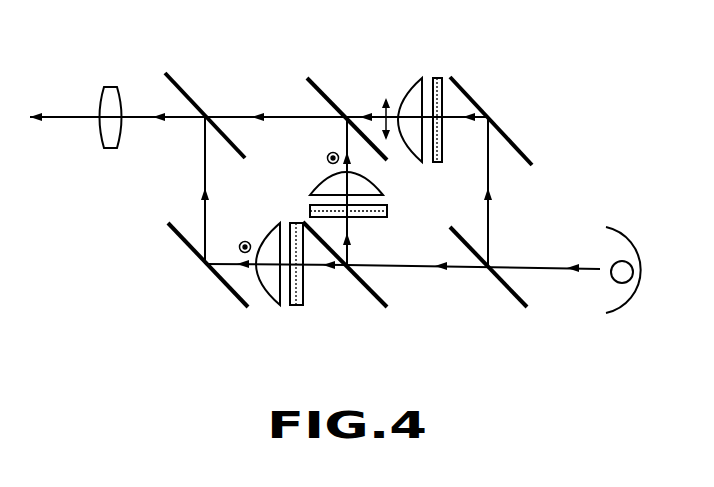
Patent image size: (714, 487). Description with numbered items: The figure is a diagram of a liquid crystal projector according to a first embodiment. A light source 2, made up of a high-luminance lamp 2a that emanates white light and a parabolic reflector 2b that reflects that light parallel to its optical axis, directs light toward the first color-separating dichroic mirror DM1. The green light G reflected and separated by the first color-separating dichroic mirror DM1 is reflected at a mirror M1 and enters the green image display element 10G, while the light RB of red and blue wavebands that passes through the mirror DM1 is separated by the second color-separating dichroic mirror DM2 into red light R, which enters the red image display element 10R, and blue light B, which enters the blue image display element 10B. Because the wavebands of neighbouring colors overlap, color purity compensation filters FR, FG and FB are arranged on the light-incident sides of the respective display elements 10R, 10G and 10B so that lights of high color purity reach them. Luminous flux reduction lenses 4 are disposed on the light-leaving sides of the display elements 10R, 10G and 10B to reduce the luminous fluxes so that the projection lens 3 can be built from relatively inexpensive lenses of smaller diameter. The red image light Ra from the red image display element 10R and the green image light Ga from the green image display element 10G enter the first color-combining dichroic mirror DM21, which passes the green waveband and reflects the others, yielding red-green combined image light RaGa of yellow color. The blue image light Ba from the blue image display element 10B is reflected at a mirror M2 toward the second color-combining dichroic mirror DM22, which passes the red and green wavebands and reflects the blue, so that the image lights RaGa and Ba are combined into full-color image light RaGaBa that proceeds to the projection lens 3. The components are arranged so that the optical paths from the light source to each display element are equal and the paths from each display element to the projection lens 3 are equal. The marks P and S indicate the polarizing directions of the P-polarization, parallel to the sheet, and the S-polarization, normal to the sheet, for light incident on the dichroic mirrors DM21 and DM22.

The light source 2 is at (603, 251).
The high-luminance lamp 2a is at (612, 262).
The reflector 2b is at (634, 296).
The projection lens 3 is at (105, 135).
The luminous flux reduction lens 4 is at (413, 82).
The green image display element 10G is at (437, 78).
The red image display element 10R is at (309, 206).
The blue image display element 10B is at (294, 306).
The color purity compensation filter FG is at (444, 97).
The color purity compensation filter FR is at (388, 213).
The color purity compensation filter FB is at (305, 291).
The first color-separating dichroic mirror DM1 is at (520, 298).
The second color-separating dichroic mirror DM2 is at (386, 303).
The first color-combining dichroic mirror DM21 is at (317, 93).
The second color-combining dichroic mirror DM22 is at (193, 94).
The mirror M1 is at (512, 146).
The mirror M2 is at (187, 246).
The polarizing direction of the P-polarization P is at (386, 96).
The polarizing direction of the S-polarization S is at (326, 158).
The red light R is at (351, 246).
The green light G is at (492, 221).
The blue light B is at (331, 269).
The light of red and blue wavebands RB is at (462, 270).
The red image light Ra is at (345, 140).
The green image light Ga is at (350, 114).
The blue image light Ba is at (203, 169).
The red-green combined image light RaGa is at (258, 114).
The full-color image light RaGaBa is at (140, 114).